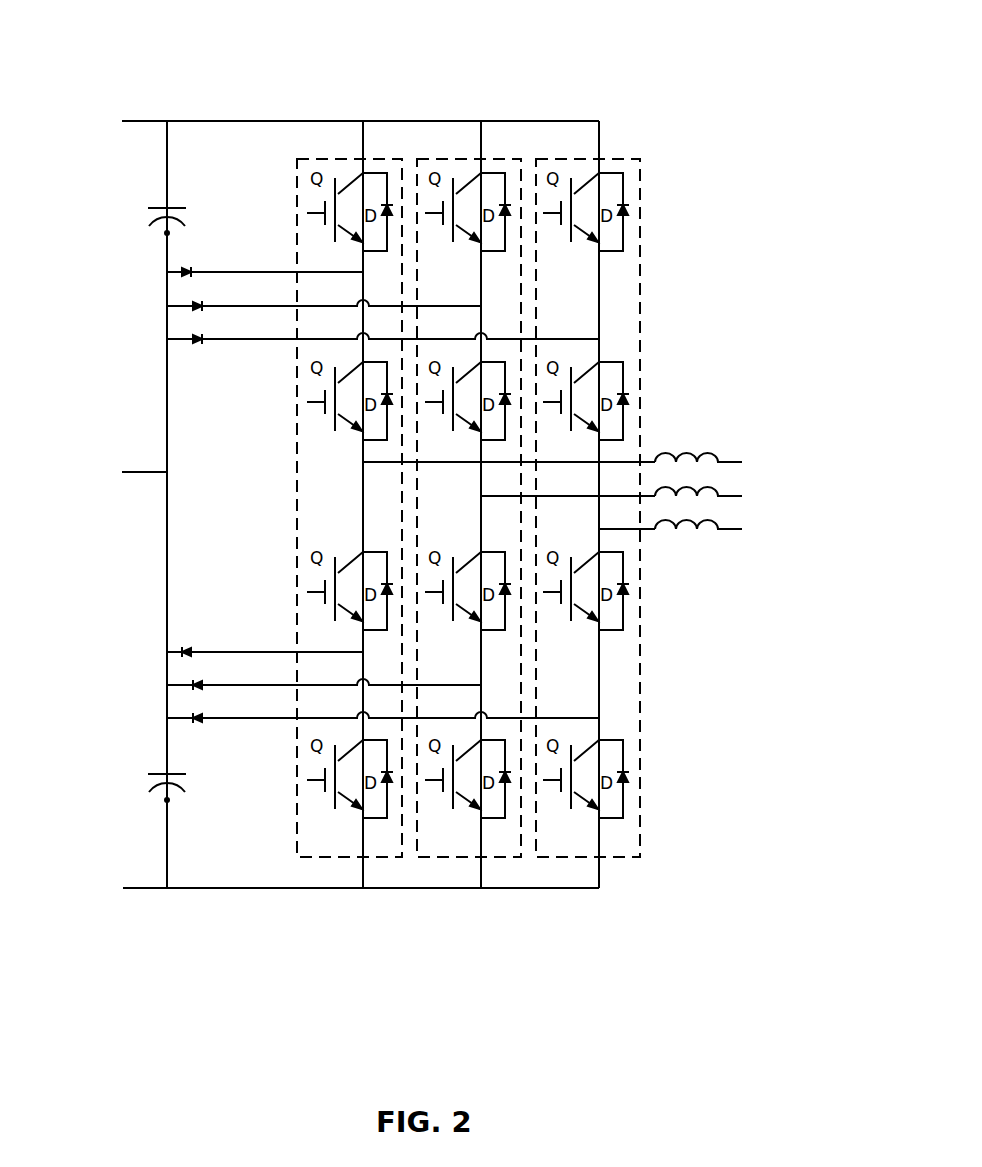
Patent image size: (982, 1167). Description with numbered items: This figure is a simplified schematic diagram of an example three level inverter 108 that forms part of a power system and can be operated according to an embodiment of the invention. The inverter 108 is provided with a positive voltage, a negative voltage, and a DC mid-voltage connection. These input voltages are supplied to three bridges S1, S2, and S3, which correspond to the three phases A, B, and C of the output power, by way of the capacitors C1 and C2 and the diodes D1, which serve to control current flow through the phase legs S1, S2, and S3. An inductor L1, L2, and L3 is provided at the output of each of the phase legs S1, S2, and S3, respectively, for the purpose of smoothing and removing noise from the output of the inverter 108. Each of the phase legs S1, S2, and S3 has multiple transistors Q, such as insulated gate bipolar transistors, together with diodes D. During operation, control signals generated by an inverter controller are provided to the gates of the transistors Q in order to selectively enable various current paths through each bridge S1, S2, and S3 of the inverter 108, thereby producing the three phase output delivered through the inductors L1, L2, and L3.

The three level inverter 108 is at (796, 35).
The capacitor C1 is at (180, 219).
The capacitor C2 is at (180, 786).
The diodes D1 is at (383, 485).
The inductor L1 is at (562, 452).
The inductor L2 is at (620, 486).
The inductor L3 is at (680, 519).
The bridge S1 is at (349, 508).
The bridge S2 is at (469, 508).
The bridge S3 is at (588, 508).